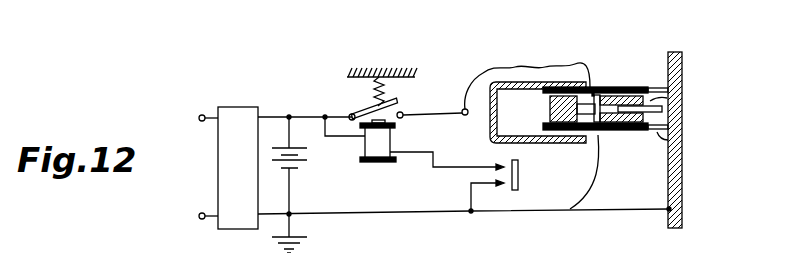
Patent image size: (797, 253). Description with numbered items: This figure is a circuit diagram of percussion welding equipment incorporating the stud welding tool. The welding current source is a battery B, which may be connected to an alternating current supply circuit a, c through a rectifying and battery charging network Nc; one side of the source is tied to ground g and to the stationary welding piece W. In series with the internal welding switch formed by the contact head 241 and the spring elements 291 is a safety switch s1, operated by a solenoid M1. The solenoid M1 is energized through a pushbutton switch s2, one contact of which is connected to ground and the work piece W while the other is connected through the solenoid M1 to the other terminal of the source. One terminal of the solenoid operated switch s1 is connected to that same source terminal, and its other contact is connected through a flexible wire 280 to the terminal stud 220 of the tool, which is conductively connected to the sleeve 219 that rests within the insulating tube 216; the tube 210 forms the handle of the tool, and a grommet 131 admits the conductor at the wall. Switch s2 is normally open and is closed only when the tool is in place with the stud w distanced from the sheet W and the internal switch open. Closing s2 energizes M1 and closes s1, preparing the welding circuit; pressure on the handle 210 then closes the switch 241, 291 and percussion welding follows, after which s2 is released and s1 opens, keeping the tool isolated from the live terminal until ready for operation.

The rectifying and battery charging network Nc is at (218, 183).
The alternating current supply circuit terminal a is at (201, 115).
The alternating current supply circuit terminal c is at (201, 219).
The battery B is at (272, 152).
The ground wire g is at (371, 214).
The safety switch s1 is at (368, 105).
The solenoid M1 is at (368, 145).
The pushbutton switch s2 is at (506, 172).
The flexible wire 280 is at (483, 73).
The metal tube 210 is at (545, 143).
The metallic tube 219 is at (543, 120).
The bolt 220 is at (590, 62).
The contact and impact head 241 is at (633, 86).
The tube of insulating material 216 is at (634, 131).
The stationary welding piece W is at (682, 110).
The stud w is at (660, 98).
The grommet 131 is at (683, 140).
The spring elements 291 is at (567, 212).